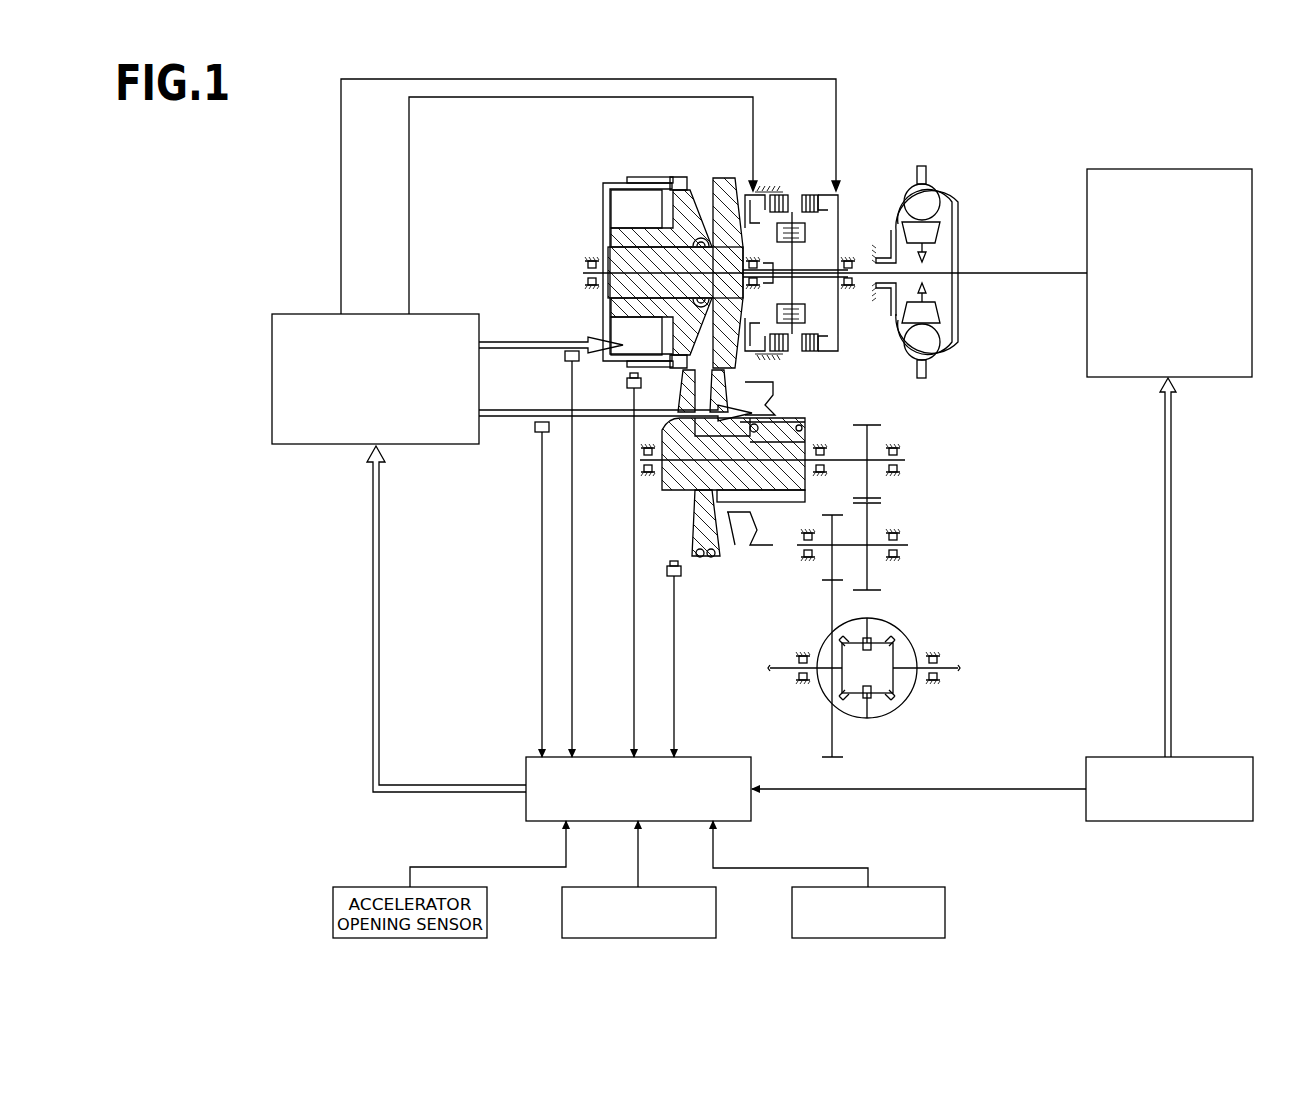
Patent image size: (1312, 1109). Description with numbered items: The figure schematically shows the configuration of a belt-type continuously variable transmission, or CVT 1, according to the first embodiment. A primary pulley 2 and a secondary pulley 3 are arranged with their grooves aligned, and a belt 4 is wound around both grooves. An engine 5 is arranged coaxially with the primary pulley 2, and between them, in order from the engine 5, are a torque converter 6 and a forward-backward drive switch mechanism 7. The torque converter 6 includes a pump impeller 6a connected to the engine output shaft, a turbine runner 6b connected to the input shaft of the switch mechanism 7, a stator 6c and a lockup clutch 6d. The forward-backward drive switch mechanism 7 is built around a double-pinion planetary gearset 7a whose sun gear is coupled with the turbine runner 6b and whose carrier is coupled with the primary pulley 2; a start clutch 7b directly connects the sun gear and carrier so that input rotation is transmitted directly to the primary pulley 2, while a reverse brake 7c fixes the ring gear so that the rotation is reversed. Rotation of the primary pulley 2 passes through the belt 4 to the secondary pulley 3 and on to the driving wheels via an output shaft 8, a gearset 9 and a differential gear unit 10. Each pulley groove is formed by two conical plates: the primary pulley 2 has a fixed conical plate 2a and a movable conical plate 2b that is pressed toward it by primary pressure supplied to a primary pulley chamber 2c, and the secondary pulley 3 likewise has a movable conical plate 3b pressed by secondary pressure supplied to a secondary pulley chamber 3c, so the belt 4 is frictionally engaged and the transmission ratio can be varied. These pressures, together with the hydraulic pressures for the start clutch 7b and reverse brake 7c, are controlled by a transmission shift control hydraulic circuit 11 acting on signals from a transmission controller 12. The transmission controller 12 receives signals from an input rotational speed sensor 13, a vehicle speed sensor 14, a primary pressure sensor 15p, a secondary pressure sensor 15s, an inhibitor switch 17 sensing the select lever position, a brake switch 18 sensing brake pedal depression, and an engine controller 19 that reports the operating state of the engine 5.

The continuously variable transmission 1 is at (612, 177).
The primary pulley 2 is at (649, 243).
The fixed conical plate 2a is at (735, 180).
The movable conical plate 2b is at (680, 178).
The primary pulley chamber 2c is at (625, 209).
The secondary pulley 3 is at (772, 498).
The movable conical plate 3b is at (715, 562).
The secondary pulley chamber 3c is at (743, 550).
The belt 4 is at (703, 235).
The engine 5 is at (1170, 168).
The torque converter 6 is at (954, 234).
The pump impeller 6a is at (905, 179).
The turbine runner 6b is at (950, 340).
The stator 6c is at (935, 226).
The lockup clutch 6d is at (962, 249).
The forward-backward drive switch mechanism 7 is at (799, 228).
The double-pinion planetary gearset 7a is at (795, 205).
The start clutch 7b is at (812, 195).
The reverse brake 7c is at (787, 195).
The output shaft 8 is at (850, 458).
The gearset 9 is at (906, 490).
The differential gear unit 10 is at (911, 630).
The transmission shift control hydraulic circuit 11 is at (300, 313).
The transmission controller 12 is at (526, 770).
The input rotational speed sensor 13 is at (627, 383).
The vehicle speed sensor 14 is at (676, 578).
The primary pressure sensor 15p is at (565, 357).
The secondary pressure sensor 15s is at (535, 428).
The inhibitor switch 17 is at (716, 912).
The brake switch 18 is at (945, 912).
The engine controller 19 is at (1210, 757).